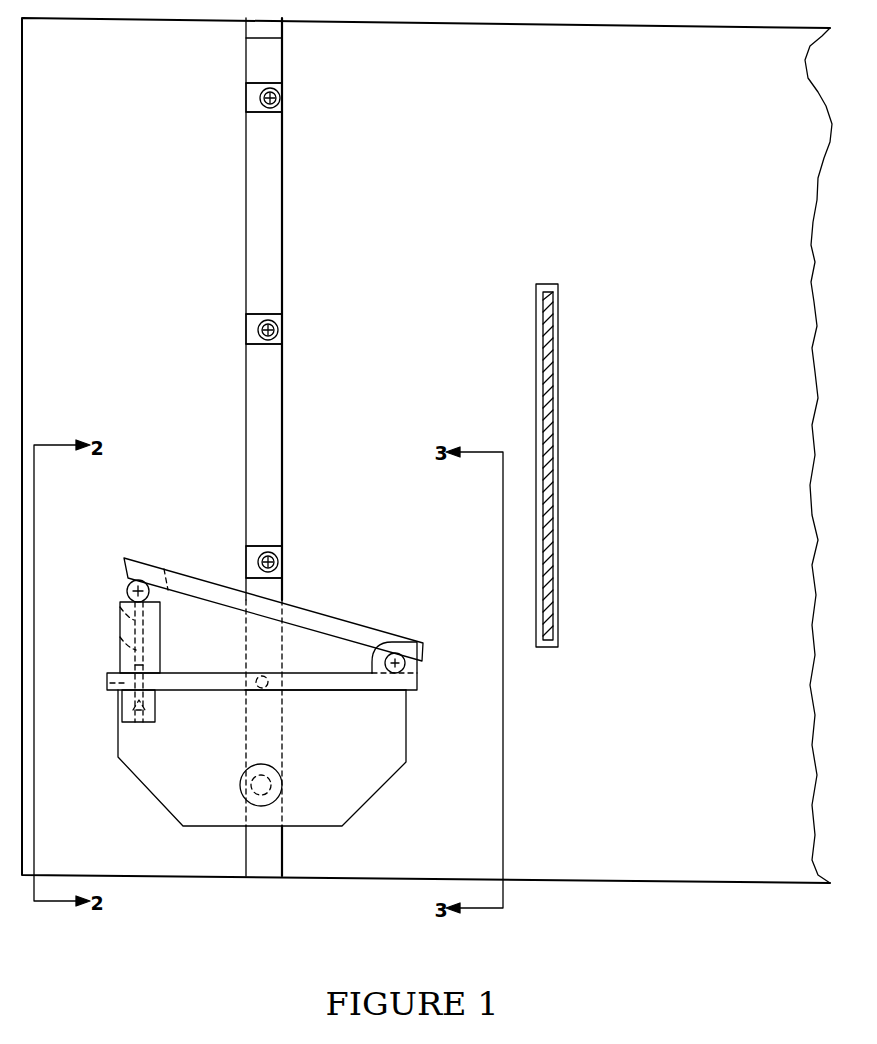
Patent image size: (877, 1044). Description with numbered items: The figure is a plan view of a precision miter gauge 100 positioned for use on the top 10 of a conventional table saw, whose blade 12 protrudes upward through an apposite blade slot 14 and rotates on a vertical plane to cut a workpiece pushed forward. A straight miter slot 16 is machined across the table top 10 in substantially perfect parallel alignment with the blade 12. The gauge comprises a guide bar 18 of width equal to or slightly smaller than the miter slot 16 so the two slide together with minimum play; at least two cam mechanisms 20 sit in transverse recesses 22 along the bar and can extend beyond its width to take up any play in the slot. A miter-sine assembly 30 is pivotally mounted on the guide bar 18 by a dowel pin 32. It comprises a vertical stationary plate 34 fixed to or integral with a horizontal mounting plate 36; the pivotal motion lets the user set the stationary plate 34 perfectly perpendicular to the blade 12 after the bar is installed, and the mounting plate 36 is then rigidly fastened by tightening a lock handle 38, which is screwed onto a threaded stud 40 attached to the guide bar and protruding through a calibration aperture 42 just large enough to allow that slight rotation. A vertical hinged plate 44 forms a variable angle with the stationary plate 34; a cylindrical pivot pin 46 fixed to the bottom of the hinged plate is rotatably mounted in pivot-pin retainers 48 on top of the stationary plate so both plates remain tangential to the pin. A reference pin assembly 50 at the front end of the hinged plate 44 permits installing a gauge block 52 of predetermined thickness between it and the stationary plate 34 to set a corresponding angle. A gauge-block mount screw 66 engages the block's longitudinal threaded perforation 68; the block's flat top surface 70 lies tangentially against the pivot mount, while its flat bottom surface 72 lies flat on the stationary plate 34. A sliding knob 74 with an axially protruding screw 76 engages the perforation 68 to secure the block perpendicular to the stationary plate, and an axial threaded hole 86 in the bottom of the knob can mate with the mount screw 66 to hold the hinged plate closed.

The table top 10 is at (427, 450).
The blade 12 is at (550, 422).
The blade slot 14 is at (560, 305).
The miter slot 16 is at (270, 28).
The guide bar 18 is at (267, 253).
The cam mechanism 20 is at (250, 96).
The transverse recess 22 is at (255, 105).
The miter-sine assembly 30 is at (412, 722).
The dowel pin 32 is at (268, 675).
The stationary plate 34 is at (308, 683).
The mounting plate 36 is at (370, 767).
The lock handle 38 is at (260, 764).
The threaded stud 40 is at (242, 787).
The calibration aperture 42 is at (282, 790).
The hinged plate 44 is at (310, 618).
The pivot pin 46 is at (403, 667).
The pivot-pin retainer 48 is at (413, 663).
The reference pin assembly 50 is at (124, 586).
The gauge block 52 is at (150, 637).
The gauge-block mount screw 66 is at (122, 598).
The threaded perforation 68 is at (120, 642).
The top surface 70 is at (155, 600).
The bottom surface 72 is at (150, 672).
The sliding knob 74 is at (150, 712).
The screw 76 is at (110, 684).
The axial threaded hole 86 is at (120, 710).
The precision miter gauge 100 is at (360, 498).